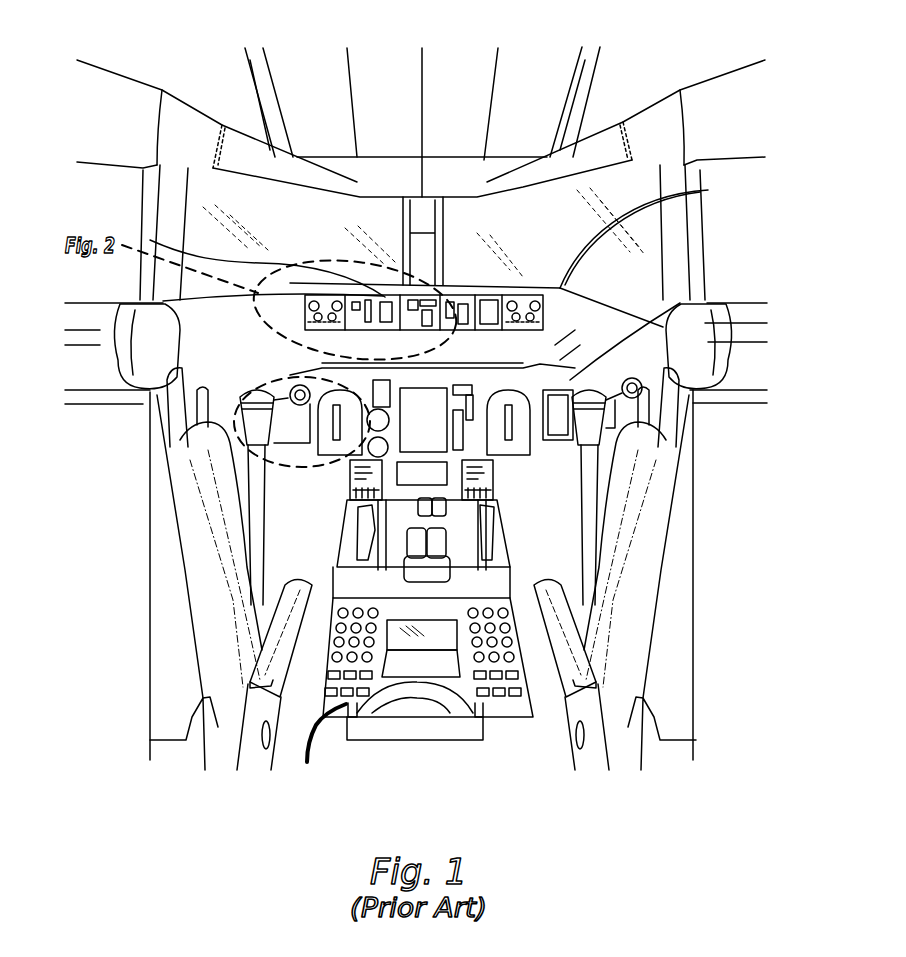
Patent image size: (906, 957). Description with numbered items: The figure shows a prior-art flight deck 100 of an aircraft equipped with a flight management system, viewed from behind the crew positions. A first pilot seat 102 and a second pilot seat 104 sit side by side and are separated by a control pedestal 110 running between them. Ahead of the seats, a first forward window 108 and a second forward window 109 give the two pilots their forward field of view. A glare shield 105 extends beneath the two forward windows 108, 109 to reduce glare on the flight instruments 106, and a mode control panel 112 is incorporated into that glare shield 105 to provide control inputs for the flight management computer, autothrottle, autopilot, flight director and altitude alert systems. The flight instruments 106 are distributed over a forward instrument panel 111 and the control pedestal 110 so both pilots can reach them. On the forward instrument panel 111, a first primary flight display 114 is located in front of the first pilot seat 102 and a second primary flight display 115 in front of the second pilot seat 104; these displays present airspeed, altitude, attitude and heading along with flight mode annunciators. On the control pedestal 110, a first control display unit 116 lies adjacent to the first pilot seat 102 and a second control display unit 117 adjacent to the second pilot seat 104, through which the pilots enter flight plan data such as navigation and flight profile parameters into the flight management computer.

The flight deck 100 is at (722, 725).
The first pilot seat 102 is at (98, 343).
The second pilot seat 104 is at (740, 337).
The glare shield 105 is at (563, 345).
The flight instruments 106 is at (550, 412).
The first forward window 108 is at (303, 235).
The second forward window 109 is at (531, 227).
The control pedestal 110 is at (507, 707).
The forward instrument panel 111 is at (545, 487).
The mode control panel 112 is at (305, 296).
The first primary flight display 114 is at (285, 385).
The second primary flight display 115 is at (528, 365).
The first control display unit 116 is at (355, 465).
The second control display unit 117 is at (545, 557).